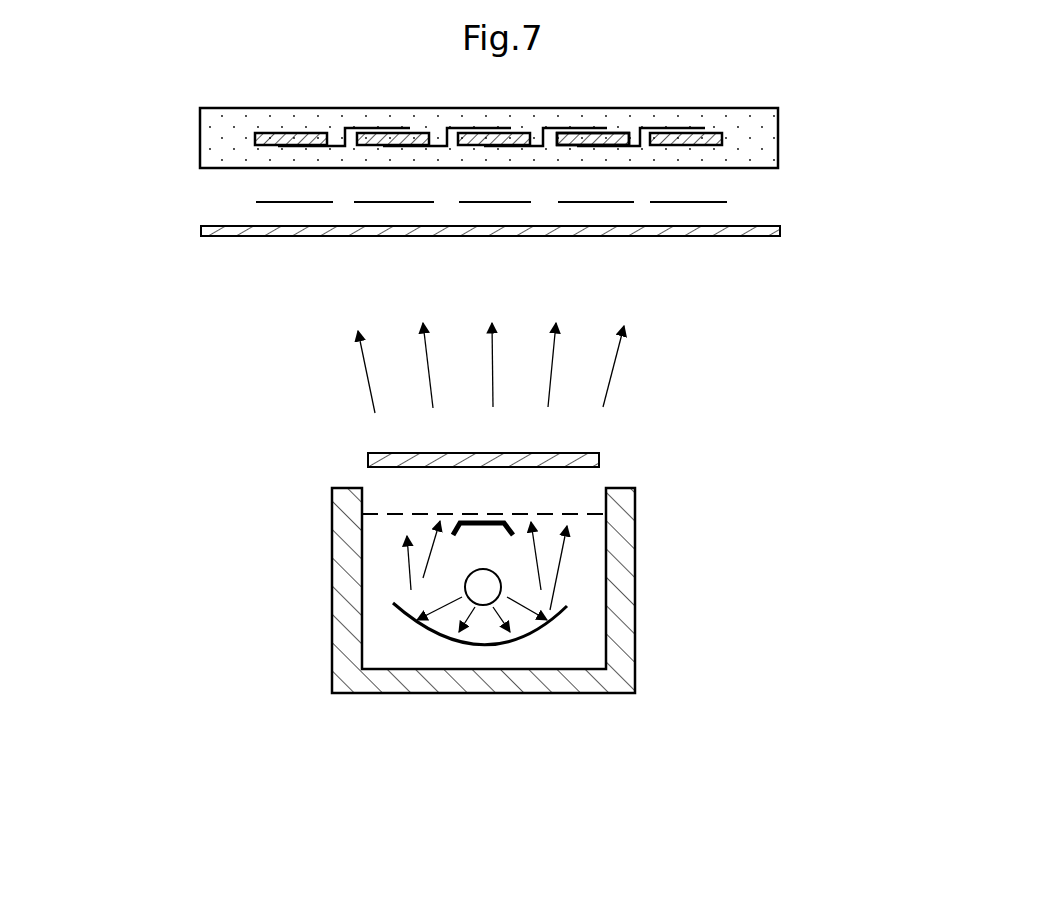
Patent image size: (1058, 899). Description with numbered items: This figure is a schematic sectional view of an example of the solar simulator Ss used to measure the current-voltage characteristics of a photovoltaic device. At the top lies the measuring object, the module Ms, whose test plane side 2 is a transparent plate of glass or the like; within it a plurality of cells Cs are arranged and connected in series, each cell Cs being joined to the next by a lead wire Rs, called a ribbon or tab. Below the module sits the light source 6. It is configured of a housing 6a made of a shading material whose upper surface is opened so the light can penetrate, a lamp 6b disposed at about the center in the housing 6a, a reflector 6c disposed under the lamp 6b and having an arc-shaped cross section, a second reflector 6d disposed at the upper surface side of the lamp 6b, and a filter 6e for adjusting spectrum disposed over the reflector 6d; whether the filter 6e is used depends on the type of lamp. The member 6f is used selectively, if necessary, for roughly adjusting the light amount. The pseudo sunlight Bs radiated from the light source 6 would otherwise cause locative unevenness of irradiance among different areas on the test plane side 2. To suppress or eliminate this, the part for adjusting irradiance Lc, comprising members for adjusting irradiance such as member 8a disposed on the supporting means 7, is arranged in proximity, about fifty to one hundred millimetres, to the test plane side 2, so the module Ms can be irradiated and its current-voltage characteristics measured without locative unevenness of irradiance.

The test plane side 2 is at (262, 169).
The module Ms is at (749, 99).
The lead wire Rs is at (557, 128).
The photovoltaic cells Cs is at (620, 132).
The member for adjusting irradiance 8a is at (705, 202).
The supporting means 7 is at (665, 237).
The part for adjusting irradiance Lc is at (178, 232).
The pseudo sunlight Bs is at (367, 381).
The solar simulator Ss is at (249, 364).
The light source 6 is at (447, 596).
The housing 6a is at (428, 690).
The lamp 6b is at (486, 601).
The reflector 6c is at (533, 638).
The reflector 6d is at (500, 522).
The filter for adjusting spectrum 6e is at (497, 453).
The member for roughly adjusting the light amount 6f is at (396, 513).